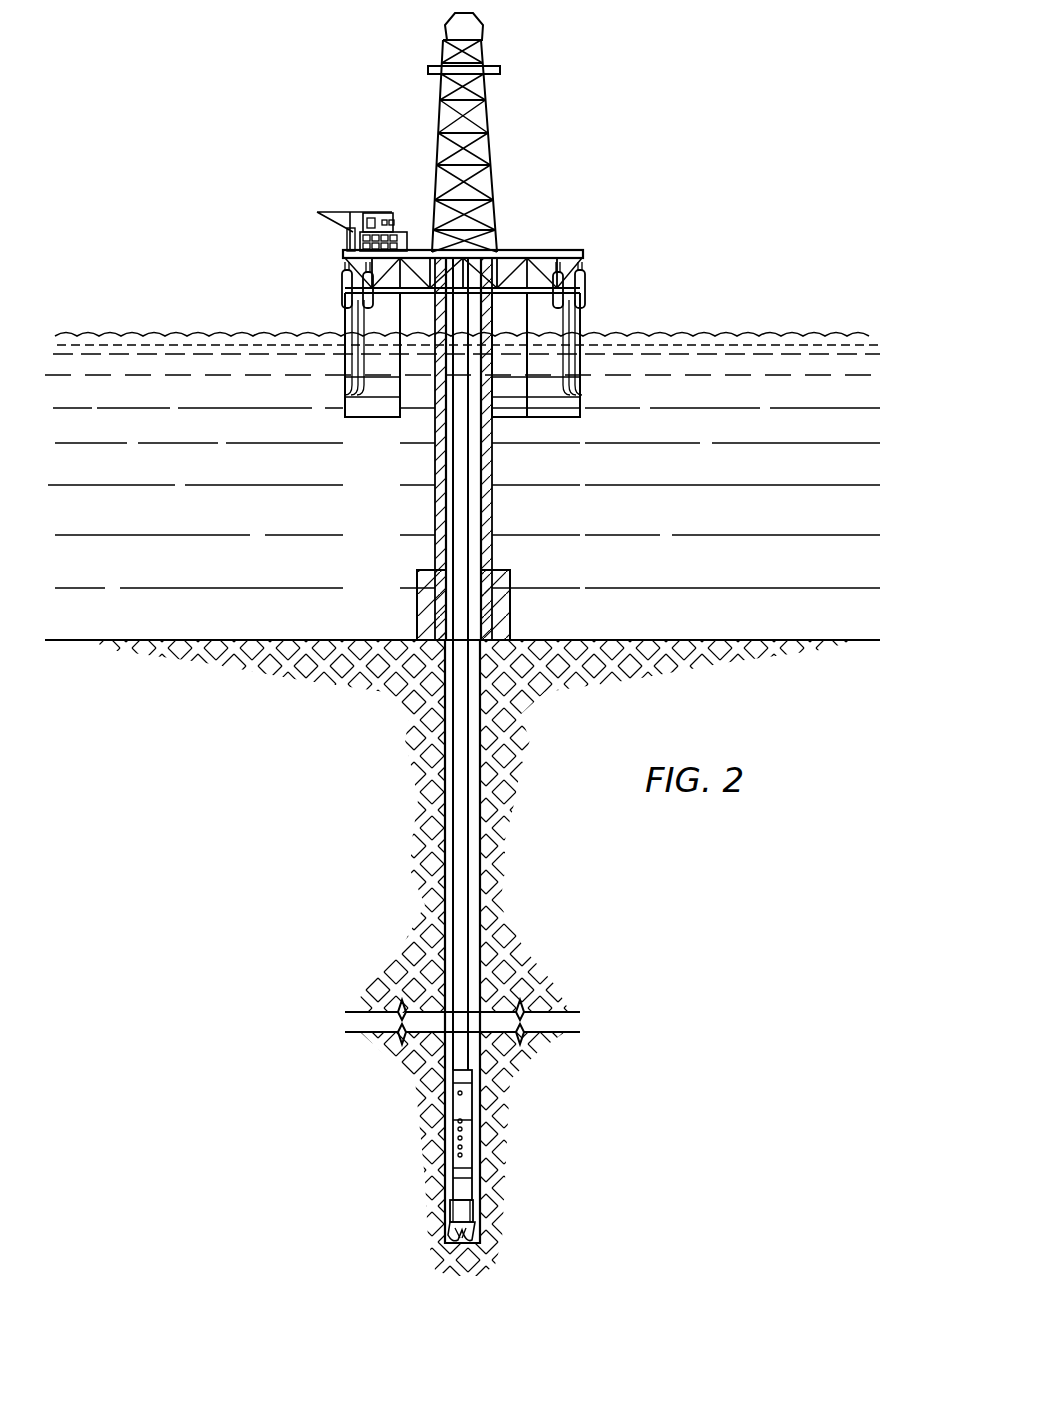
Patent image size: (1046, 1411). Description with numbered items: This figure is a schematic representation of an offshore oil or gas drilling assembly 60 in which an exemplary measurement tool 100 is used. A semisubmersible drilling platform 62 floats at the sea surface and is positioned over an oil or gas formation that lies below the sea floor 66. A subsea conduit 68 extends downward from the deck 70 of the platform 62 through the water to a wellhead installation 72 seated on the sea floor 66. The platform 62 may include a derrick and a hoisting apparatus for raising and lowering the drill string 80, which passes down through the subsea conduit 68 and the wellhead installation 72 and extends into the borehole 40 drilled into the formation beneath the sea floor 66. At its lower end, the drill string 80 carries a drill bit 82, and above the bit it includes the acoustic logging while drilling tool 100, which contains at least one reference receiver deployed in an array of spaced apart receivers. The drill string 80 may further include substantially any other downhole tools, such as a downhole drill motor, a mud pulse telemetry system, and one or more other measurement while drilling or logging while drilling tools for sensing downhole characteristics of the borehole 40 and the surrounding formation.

The offshore oil or gas drilling assembly 60 is at (475, 215).
The semisubmersible drilling platform 62 is at (570, 253).
The deck 70 is at (585, 290).
The drill string 80 is at (463, 431).
The subsea conduit 68 is at (492, 510).
The wellhead installation 72 is at (498, 569).
The sea floor 66 is at (738, 639).
The borehole 40 is at (446, 911).
The measurement tool 100 is at (471, 1110).
The drill bit 82 is at (473, 1210).